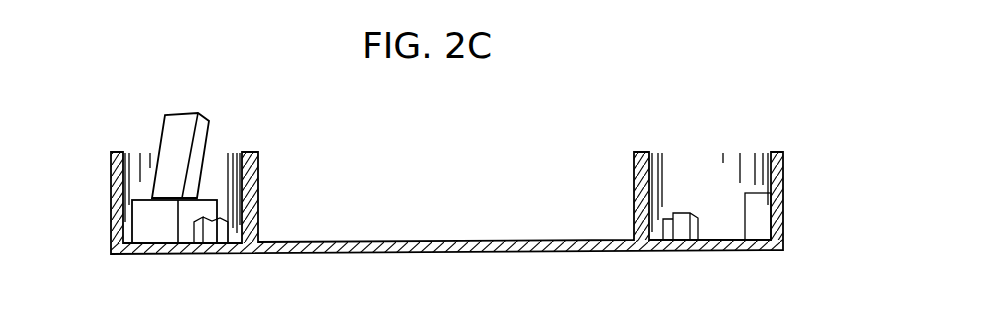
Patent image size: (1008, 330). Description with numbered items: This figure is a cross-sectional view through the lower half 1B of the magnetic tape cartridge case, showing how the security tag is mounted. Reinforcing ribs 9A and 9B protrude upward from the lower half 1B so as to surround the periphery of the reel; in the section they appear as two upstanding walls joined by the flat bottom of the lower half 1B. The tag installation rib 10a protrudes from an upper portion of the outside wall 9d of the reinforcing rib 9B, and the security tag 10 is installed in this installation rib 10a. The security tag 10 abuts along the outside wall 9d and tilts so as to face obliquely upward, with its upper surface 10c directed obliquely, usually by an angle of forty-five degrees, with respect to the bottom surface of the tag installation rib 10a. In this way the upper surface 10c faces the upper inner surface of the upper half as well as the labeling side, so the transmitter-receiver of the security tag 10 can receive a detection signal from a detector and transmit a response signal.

The lower half 1B is at (783, 198).
The reinforcing rib 9A is at (633, 187).
The reinforcing rib 9B is at (258, 190).
The outside wall 9d is at (222, 178).
The security tag 10 is at (132, 143).
The tag installation rib 10a is at (143, 235).
The upper surface 10c is at (172, 145).